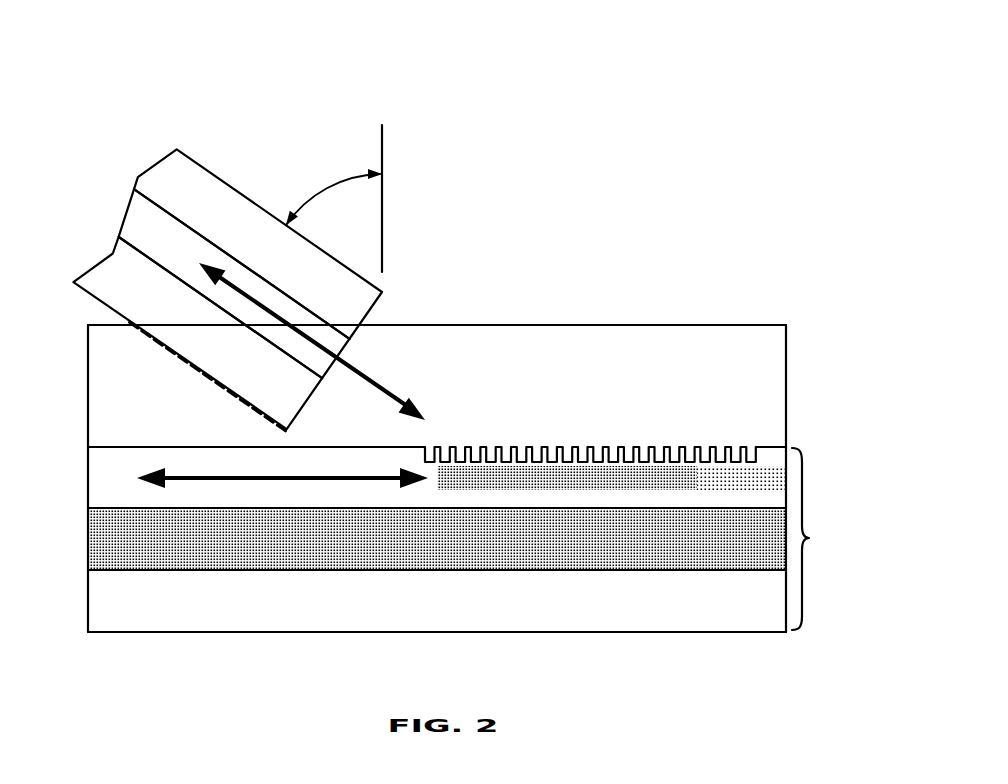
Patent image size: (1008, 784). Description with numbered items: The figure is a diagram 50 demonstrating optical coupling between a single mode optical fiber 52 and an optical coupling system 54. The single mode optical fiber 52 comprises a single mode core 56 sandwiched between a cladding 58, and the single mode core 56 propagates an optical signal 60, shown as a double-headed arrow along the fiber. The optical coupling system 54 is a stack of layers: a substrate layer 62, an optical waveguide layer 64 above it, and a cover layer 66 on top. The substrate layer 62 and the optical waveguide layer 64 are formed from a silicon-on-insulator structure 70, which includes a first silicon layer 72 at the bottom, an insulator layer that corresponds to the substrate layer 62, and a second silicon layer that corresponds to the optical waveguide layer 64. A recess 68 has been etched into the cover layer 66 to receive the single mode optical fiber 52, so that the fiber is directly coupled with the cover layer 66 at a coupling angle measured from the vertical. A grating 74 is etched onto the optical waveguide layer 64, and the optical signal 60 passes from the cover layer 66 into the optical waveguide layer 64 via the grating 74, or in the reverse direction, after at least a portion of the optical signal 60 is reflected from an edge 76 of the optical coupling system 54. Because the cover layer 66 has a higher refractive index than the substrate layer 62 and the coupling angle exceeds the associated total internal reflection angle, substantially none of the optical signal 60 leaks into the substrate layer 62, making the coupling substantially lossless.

The diagram 50 is at (142, 49).
The single mode optical fiber 52 is at (217, 173).
The optical coupling system 54 is at (764, 325).
The single mode core 56 is at (234, 283).
The cladding 58 is at (234, 280).
The optical signal 60 is at (360, 373).
The substrate layer 62 is at (437, 540).
The optical waveguide layer 64 is at (437, 487).
The cover layer 66 is at (106, 478).
The recess 68 is at (243, 400).
The silicon-on-insulator structure 70 is at (815, 539).
The first silicon layer 72 is at (437, 611).
The grating 74 is at (596, 430).
The edge 76 is at (800, 400).